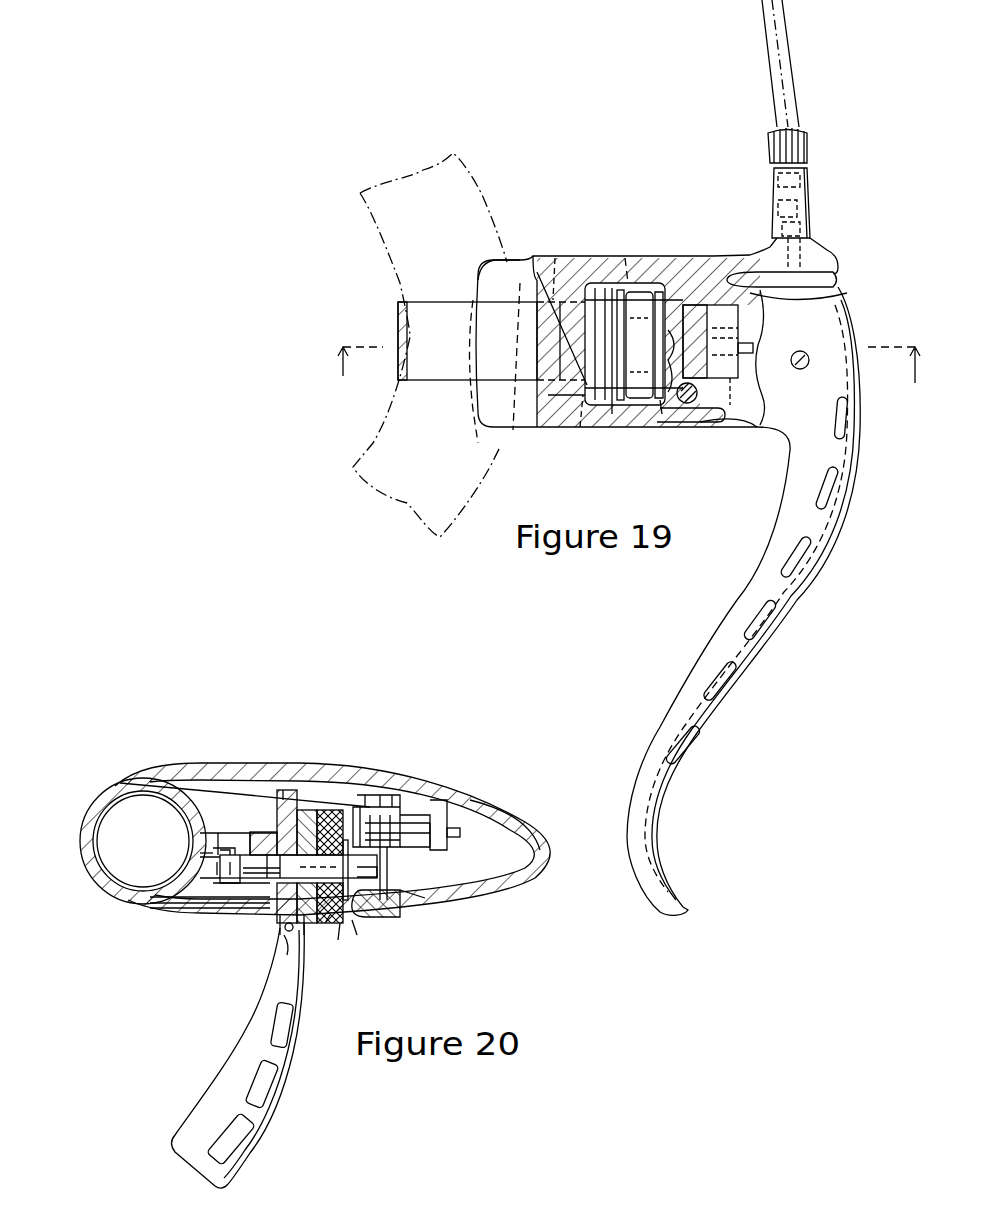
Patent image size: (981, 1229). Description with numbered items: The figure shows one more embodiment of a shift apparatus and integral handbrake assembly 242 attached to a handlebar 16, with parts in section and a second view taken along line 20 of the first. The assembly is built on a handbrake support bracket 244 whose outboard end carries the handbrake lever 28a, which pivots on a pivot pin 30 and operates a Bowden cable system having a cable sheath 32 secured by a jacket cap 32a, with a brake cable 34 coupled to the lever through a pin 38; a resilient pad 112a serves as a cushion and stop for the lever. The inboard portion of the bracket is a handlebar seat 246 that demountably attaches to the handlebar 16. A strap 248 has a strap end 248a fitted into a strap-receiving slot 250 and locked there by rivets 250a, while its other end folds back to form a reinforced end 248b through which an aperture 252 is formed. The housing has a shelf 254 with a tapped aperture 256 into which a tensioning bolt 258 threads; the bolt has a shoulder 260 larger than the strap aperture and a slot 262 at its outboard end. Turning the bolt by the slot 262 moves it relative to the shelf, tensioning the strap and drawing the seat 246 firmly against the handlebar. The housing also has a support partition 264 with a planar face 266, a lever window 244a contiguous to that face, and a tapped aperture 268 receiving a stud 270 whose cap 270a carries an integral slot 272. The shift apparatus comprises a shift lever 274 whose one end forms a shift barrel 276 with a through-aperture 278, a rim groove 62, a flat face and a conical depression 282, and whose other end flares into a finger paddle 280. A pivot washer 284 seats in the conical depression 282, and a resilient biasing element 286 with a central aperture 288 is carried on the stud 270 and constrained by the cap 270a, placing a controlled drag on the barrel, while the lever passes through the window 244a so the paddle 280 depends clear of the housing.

In FIG. 19, the handlebar 16 is at (372, 246).
In FIG. 20, the handlebar 16 is at (120, 783).
In FIG. 19, the line 20— 20 is at (626, 384).
In FIG. 19, the handbrake lever 28a is at (708, 708).
In FIG. 20, the handbrake lever 28a is at (523, 813).
In FIG. 19, the pivot pin 30 is at (723, 427).
In FIG. 20, the pivot pin 30 is at (387, 895).
In FIG. 19, the cable sheath 32 is at (778, 58).
In FIG. 19, the jacket cap 32a is at (808, 210).
In FIG. 19, the brake cable 34 is at (800, 265).
In FIG. 19, the pin 38 is at (808, 353).
In FIG. 19, the rim groove 62 is at (615, 427).
In FIG. 20, the rim groove 62 is at (289, 945).
In FIG. 19, the resilient pad 112a is at (840, 280).
In FIG. 19, the shift apparatus and integral handbrake assembly 242 is at (632, 258).
In FIG. 20, the shift apparatus and integral handbrake assembly 242 is at (322, 805).
In FIG. 19, the handbrake support bracket 244 is at (540, 275).
In FIG. 20, the handbrake support bracket 244 is at (255, 790).
In FIG. 20, the lever window 244a is at (350, 905).
In FIG. 19, the handlebar seat 246 is at (500, 258).
In FIG. 20, the handlebar seat 246 is at (150, 770).
In FIG. 19, the strap 248 is at (398, 330).
In FIG. 20, the strap 248 is at (95, 875).
In FIG. 20, the strap end 248a is at (182, 920).
In FIG. 19, the reinforced end 248b is at (742, 315).
In FIG. 20, the reinforced end 248b is at (443, 817).
In FIG. 20, the strap-receiving slot 250 is at (197, 913).
In FIG. 19, the rivets 250a is at (556, 258).
In FIG. 20, the rivets 250a is at (205, 915).
In FIG. 20, the aperture 252 is at (440, 847).
In FIG. 19, the shelf 254 is at (722, 258).
In FIG. 20, the shelf 254 is at (372, 813).
In FIG. 20, the tapped aperture 256 is at (360, 825).
In FIG. 19, the tensioning bolt 258 is at (712, 405).
In FIG. 20, the tensioning bolt 258 is at (397, 830).
In FIG. 20, the shoulder 260 is at (412, 840).
In FIG. 19, the slot 262 is at (755, 408).
In FIG. 20, the slot 262 is at (460, 832).
In FIG. 19, the support partition 264 is at (545, 415).
In FIG. 20, the support partition 264 is at (247, 785).
In FIG. 19, the planar face 266 is at (596, 290).
In FIG. 20, the planar face 266 is at (268, 820).
In FIG. 20, the tapped aperture 268 is at (213, 868).
In FIG. 19, the stud 270 is at (640, 285).
In FIG. 20, the stud 270 is at (250, 860).
In FIG. 19, the cap 270a is at (642, 420).
In FIG. 20, the cap 270a is at (332, 920).
In FIG. 20, the slot 272 is at (425, 903).
In FIG. 20, the shift lever 274 is at (278, 935).
In FIG. 19, the shift barrel 276 is at (656, 430).
In FIG. 20, the shift barrel 276 is at (300, 940).
In FIG. 19, the through-aperture 278 is at (625, 258).
In FIG. 20, the through-aperture 278 is at (294, 810).
In FIG. 20, the finger paddle 280 is at (236, 1090).
In FIG. 19, the conical depression 282 is at (690, 404).
In FIG. 20, the conical depression 282 is at (343, 935).
In FIG. 19, the pivot washer 284 is at (655, 290).
In FIG. 20, the pivot washer 284 is at (315, 818).
In FIG. 19, the biasing element 286 is at (650, 300).
In FIG. 20, the biasing element 286 is at (335, 808).
In FIG. 19, the central aperture 288 is at (537, 355).
In FIG. 20, the central aperture 288 is at (354, 930).